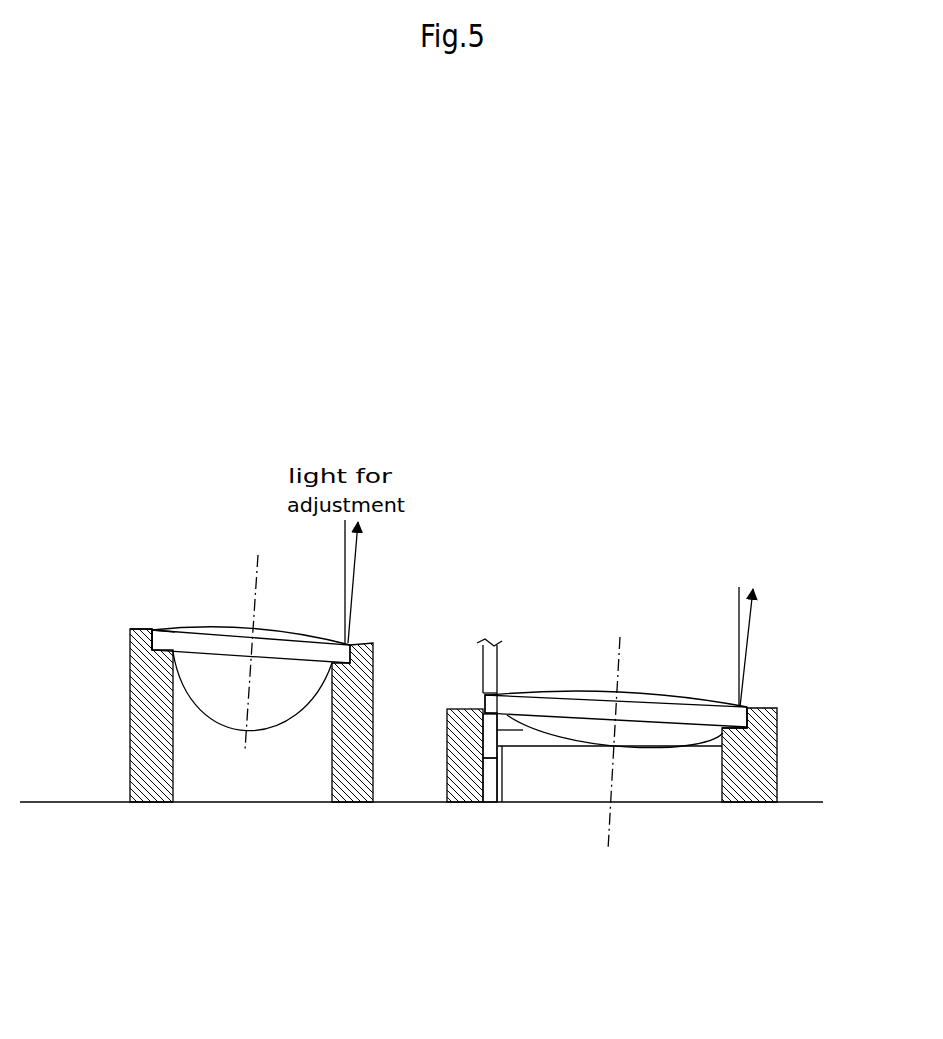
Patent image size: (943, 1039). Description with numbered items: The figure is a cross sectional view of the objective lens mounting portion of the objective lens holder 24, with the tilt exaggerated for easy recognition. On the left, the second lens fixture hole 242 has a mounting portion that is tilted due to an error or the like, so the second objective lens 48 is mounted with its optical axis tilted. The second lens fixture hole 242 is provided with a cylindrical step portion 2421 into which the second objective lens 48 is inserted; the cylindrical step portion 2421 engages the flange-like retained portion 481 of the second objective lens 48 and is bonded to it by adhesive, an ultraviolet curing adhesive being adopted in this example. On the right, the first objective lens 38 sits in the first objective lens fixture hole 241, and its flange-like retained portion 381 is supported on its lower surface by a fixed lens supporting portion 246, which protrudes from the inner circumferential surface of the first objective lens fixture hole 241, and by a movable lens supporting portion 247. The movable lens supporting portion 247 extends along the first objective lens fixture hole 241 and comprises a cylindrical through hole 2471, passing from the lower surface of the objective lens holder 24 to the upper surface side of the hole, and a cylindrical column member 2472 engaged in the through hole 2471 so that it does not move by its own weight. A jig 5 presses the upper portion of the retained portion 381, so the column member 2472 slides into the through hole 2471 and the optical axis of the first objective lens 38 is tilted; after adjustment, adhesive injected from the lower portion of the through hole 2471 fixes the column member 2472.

The jig 5 is at (492, 657).
The objective lens holder 24 is at (455, 562).
The first objective lens 38 is at (683, 713).
The second objective lens 48 is at (210, 643).
The first objective lens fixture hole 241 is at (724, 787).
The second lens fixture hole 242 is at (153, 708).
The fixed lens supporting portion 246 is at (734, 731).
The movable lens supporting portion 247 is at (500, 772).
The retained portion 381 is at (495, 703).
The retained portion 481 is at (153, 636).
The cylindrical step portion 2421 is at (131, 638).
The through hole 2471 is at (492, 787).
The column member 2472 is at (486, 750).